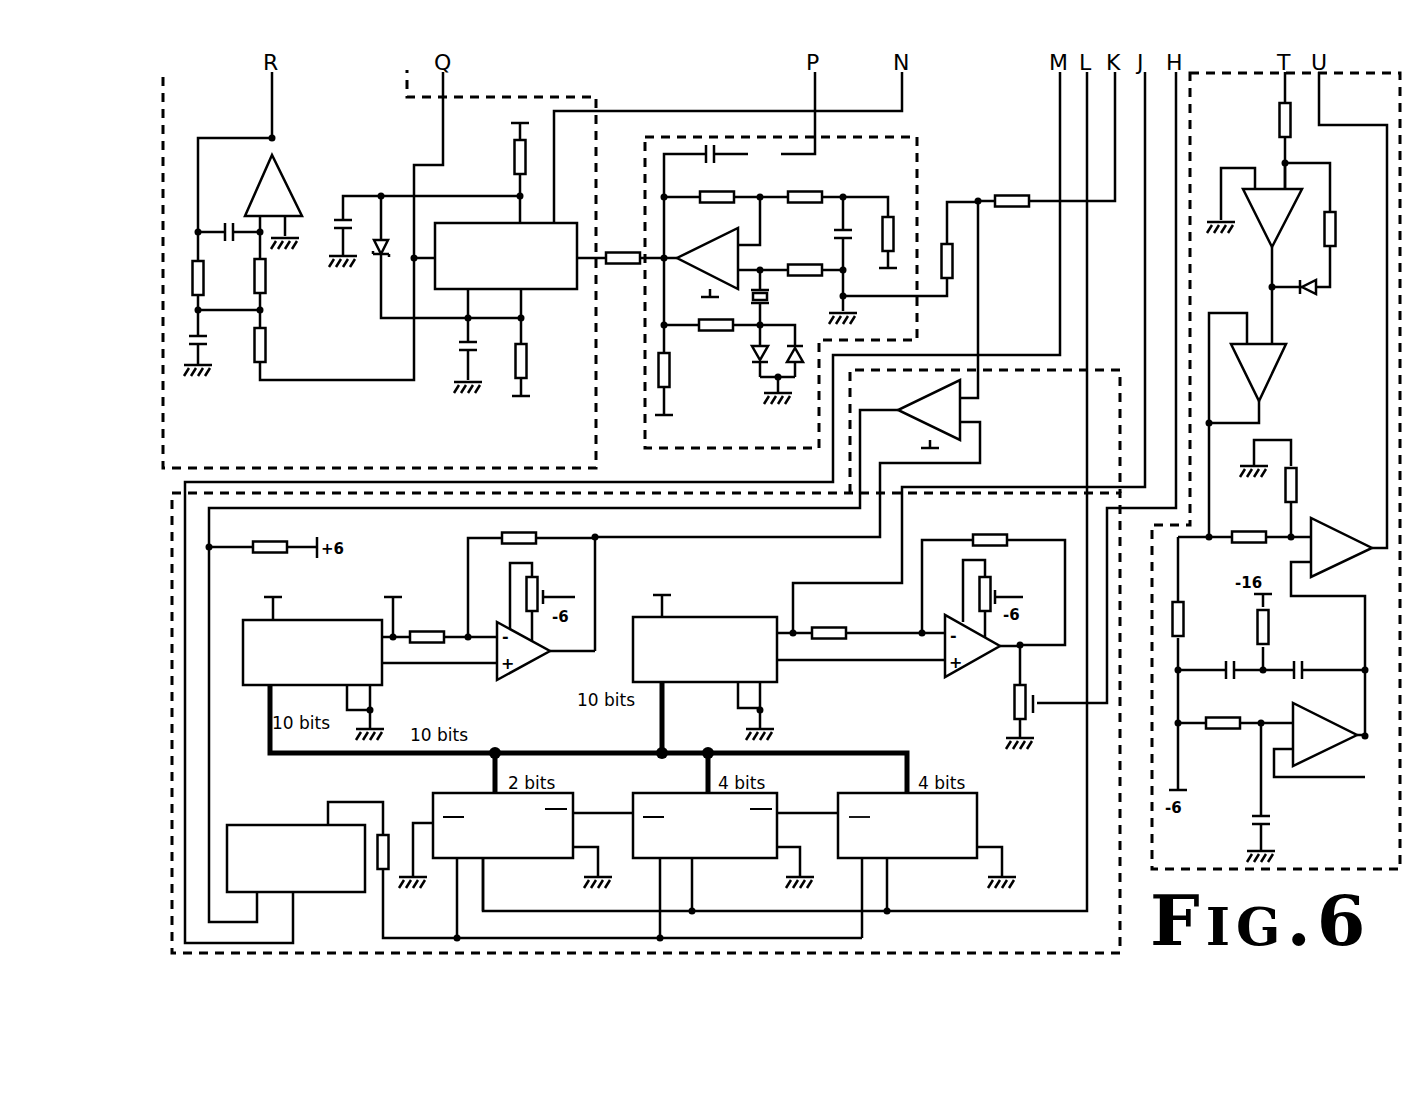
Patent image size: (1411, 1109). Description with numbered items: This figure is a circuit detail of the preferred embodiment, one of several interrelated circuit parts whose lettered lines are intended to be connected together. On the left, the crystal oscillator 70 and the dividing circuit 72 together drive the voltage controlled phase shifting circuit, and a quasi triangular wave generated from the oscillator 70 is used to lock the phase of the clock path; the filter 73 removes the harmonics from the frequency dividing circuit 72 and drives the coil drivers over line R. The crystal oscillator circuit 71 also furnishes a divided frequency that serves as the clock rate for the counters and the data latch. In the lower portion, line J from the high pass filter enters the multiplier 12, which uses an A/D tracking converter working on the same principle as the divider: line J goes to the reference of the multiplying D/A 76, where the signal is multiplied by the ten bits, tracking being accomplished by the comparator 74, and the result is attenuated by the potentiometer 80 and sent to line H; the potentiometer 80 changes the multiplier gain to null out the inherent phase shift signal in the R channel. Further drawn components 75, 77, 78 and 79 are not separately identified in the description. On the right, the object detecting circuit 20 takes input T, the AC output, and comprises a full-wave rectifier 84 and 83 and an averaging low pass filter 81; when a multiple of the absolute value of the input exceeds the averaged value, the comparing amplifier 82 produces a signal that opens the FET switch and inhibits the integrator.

The multiplier 12 is at (1106, 451).
The object detecting circuit 20 is at (586, 419).
The crystal oscillator 70 is at (714, 258).
The crystal oscillator circuit 71 is at (808, 414).
The dividing circuit 72 is at (490, 240).
The filter 73 is at (285, 178).
The comparator 74 is at (964, 415).
The digital-to-analog converter 75 is at (320, 637).
The multiplying D/A 76 is at (713, 633).
The up/down counter 4516 77 is at (455, 805).
The up/down counter 4516 78 is at (683, 803).
The up/down counter 4516 79 is at (885, 810).
The potentiometer 80 is at (1005, 702).
The low pass filter 81 is at (268, 838).
The comparing amplifier 82 is at (1337, 546).
The full-wave rectifier 83 is at (1262, 370).
The full-wave rectifier 84 is at (1266, 216).